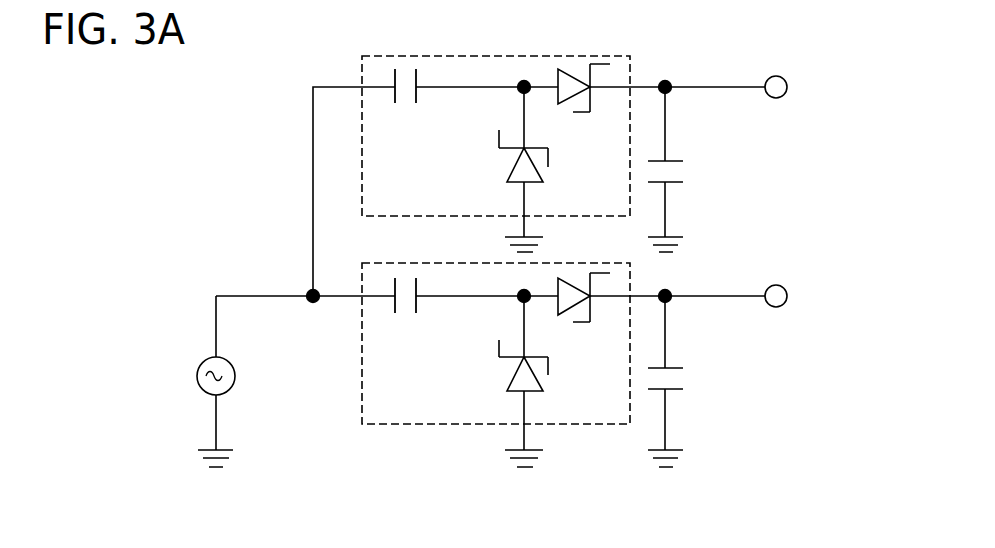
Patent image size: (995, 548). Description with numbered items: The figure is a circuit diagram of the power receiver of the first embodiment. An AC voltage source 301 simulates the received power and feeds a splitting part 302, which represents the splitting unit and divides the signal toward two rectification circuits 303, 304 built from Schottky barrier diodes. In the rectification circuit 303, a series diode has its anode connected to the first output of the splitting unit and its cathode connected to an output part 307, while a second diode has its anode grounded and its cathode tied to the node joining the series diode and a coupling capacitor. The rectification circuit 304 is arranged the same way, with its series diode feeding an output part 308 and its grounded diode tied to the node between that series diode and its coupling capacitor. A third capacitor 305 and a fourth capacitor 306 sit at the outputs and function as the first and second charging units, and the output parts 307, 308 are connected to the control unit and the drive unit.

The AC voltage source 301 is at (197, 367).
The splitting part 302 is at (313, 303).
The rectification circuit 303 is at (423, 430).
The rectification circuit 304 is at (457, 223).
The capacitor C3 305 is at (692, 402).
The capacitor C4 306 is at (692, 192).
The output part 307 is at (787, 303).
The output part 308 is at (787, 95).